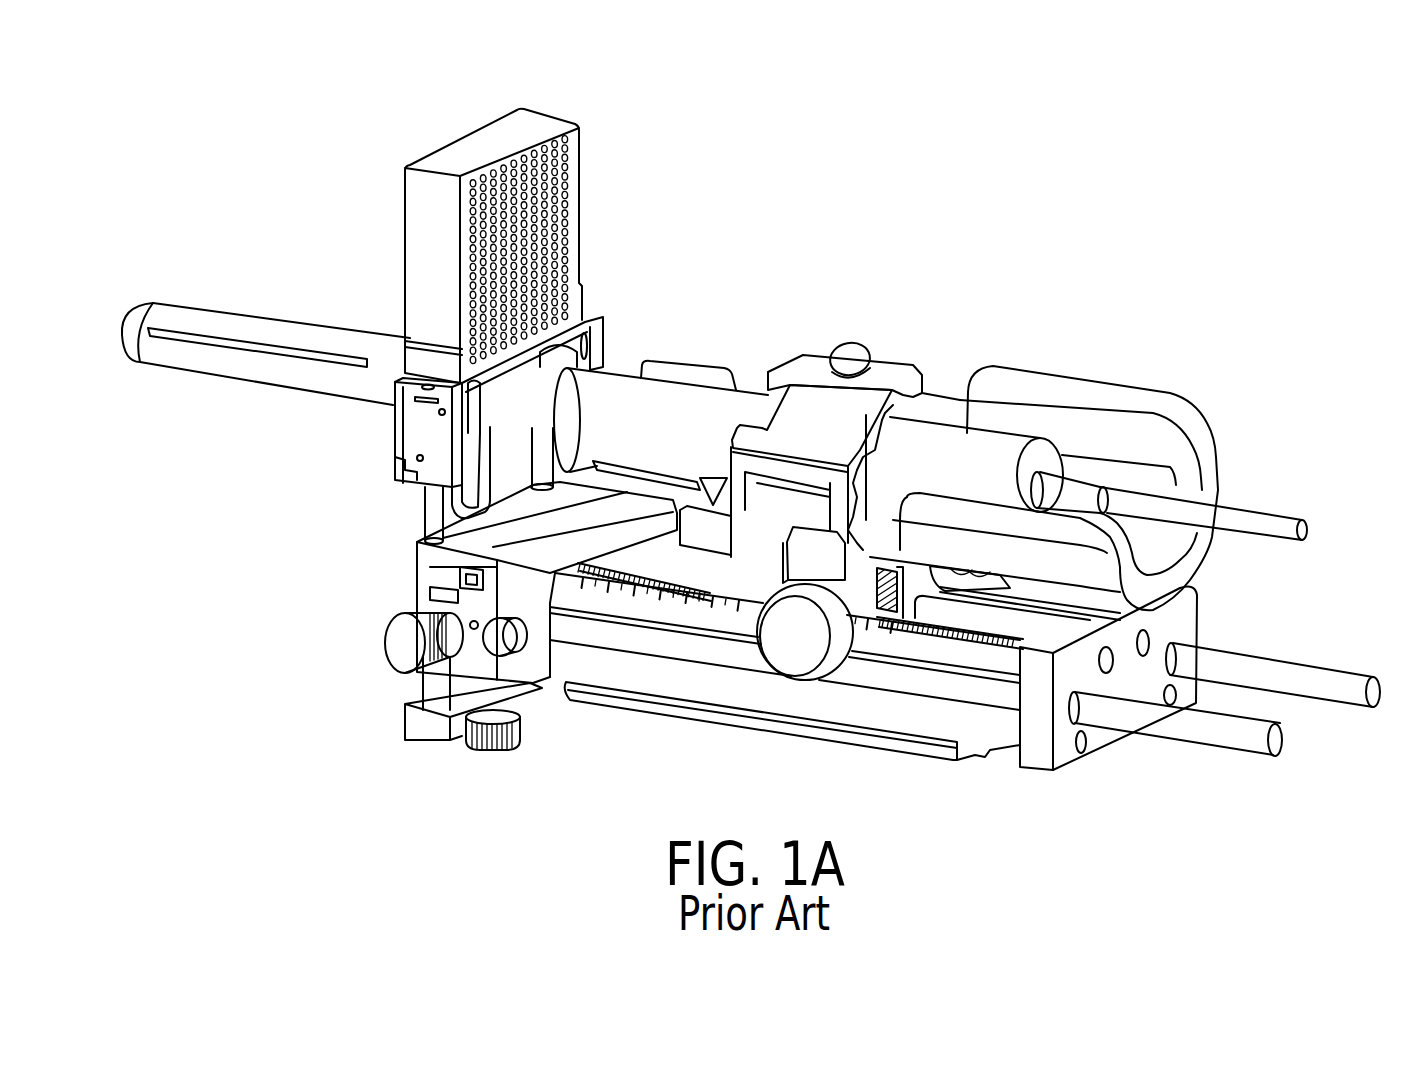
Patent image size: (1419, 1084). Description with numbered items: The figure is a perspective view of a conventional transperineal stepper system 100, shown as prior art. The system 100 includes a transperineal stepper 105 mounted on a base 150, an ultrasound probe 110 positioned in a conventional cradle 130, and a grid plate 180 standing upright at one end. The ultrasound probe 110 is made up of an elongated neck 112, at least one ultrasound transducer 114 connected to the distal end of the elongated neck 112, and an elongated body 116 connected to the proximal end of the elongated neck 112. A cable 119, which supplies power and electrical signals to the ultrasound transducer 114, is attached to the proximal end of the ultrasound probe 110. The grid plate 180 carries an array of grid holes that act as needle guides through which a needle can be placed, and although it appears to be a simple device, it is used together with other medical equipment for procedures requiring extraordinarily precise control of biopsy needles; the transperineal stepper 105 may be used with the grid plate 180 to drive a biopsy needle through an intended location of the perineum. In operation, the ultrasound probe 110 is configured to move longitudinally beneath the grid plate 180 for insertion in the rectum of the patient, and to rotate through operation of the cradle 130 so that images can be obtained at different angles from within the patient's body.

The transperineal stepper system 100 is at (1285, 180).
The transperineal stepper 105 is at (869, 333).
The ultrasound probe 110 is at (679, 397).
The elongated neck 112 is at (323, 395).
The ultrasound transducer 114 is at (252, 347).
The elongated body 116 is at (995, 462).
The cable 119 is at (1275, 510).
The cradle 130 is at (1213, 455).
The base 150 is at (687, 683).
The grid plate 180 is at (457, 140).